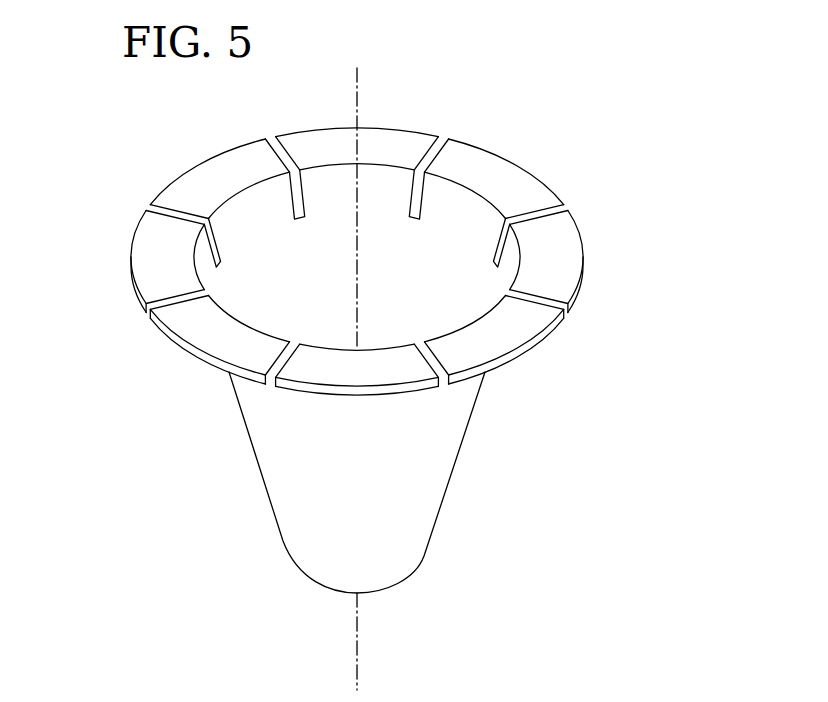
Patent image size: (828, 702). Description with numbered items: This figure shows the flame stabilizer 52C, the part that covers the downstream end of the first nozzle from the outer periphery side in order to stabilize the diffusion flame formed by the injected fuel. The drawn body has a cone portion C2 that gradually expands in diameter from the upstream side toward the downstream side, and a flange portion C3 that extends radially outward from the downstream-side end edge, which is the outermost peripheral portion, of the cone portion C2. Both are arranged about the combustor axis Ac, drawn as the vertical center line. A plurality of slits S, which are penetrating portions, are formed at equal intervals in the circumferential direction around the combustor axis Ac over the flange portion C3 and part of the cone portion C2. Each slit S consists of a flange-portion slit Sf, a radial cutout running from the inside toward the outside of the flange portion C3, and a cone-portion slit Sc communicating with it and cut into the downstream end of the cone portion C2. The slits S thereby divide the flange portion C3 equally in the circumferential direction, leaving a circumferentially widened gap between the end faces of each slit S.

The flame stabilizer 52C is at (376, 326).
The flange portion C3 is at (514, 197).
The cone portion C2 is at (288, 522).
The slit S is at (364, 308).
The flange-portion slit Sf is at (273, 143).
The cone-portion slit Sc is at (505, 292).
The combustor axis Ac is at (357, 637).